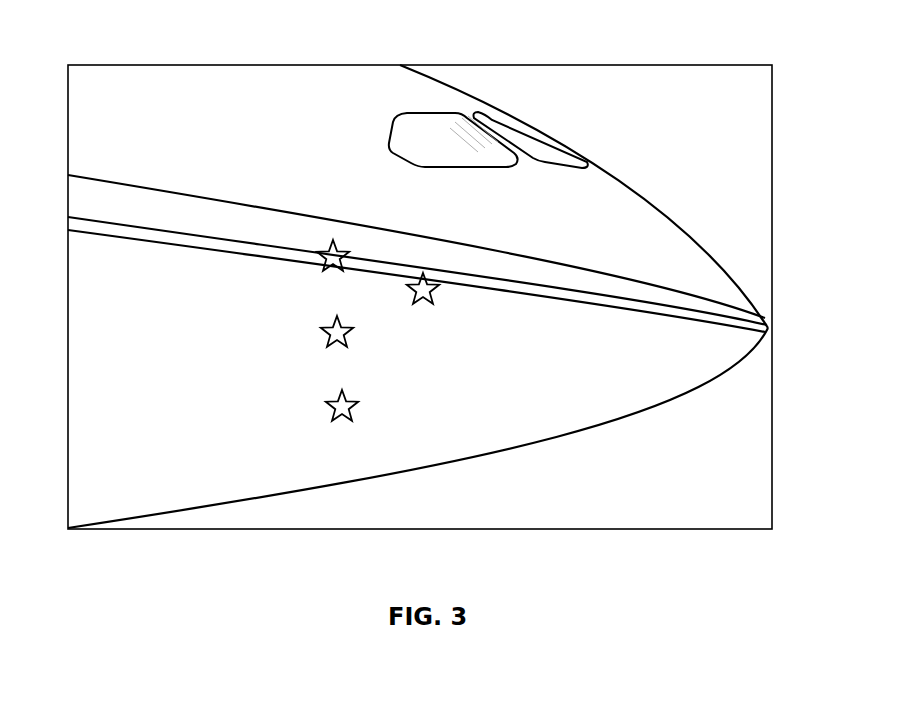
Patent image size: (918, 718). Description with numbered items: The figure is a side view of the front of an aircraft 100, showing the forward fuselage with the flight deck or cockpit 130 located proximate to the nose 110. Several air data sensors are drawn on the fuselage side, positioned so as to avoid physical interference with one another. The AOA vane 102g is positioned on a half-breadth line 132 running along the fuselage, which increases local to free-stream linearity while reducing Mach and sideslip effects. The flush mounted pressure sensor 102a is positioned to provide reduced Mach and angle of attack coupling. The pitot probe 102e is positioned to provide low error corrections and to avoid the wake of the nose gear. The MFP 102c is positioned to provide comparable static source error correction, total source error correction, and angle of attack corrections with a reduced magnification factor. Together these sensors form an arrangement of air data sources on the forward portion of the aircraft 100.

The aircraft 100 is at (353, 72).
The nose 110 is at (764, 327).
The flight deck or cockpit 130 is at (535, 157).
The half-breadth line 132 is at (509, 303).
The AOA vane 102g is at (349, 252).
The flush mounted pressure sensor 102a is at (439, 292).
The pitot probe 102e is at (353, 333).
The MFP 102c is at (348, 422).